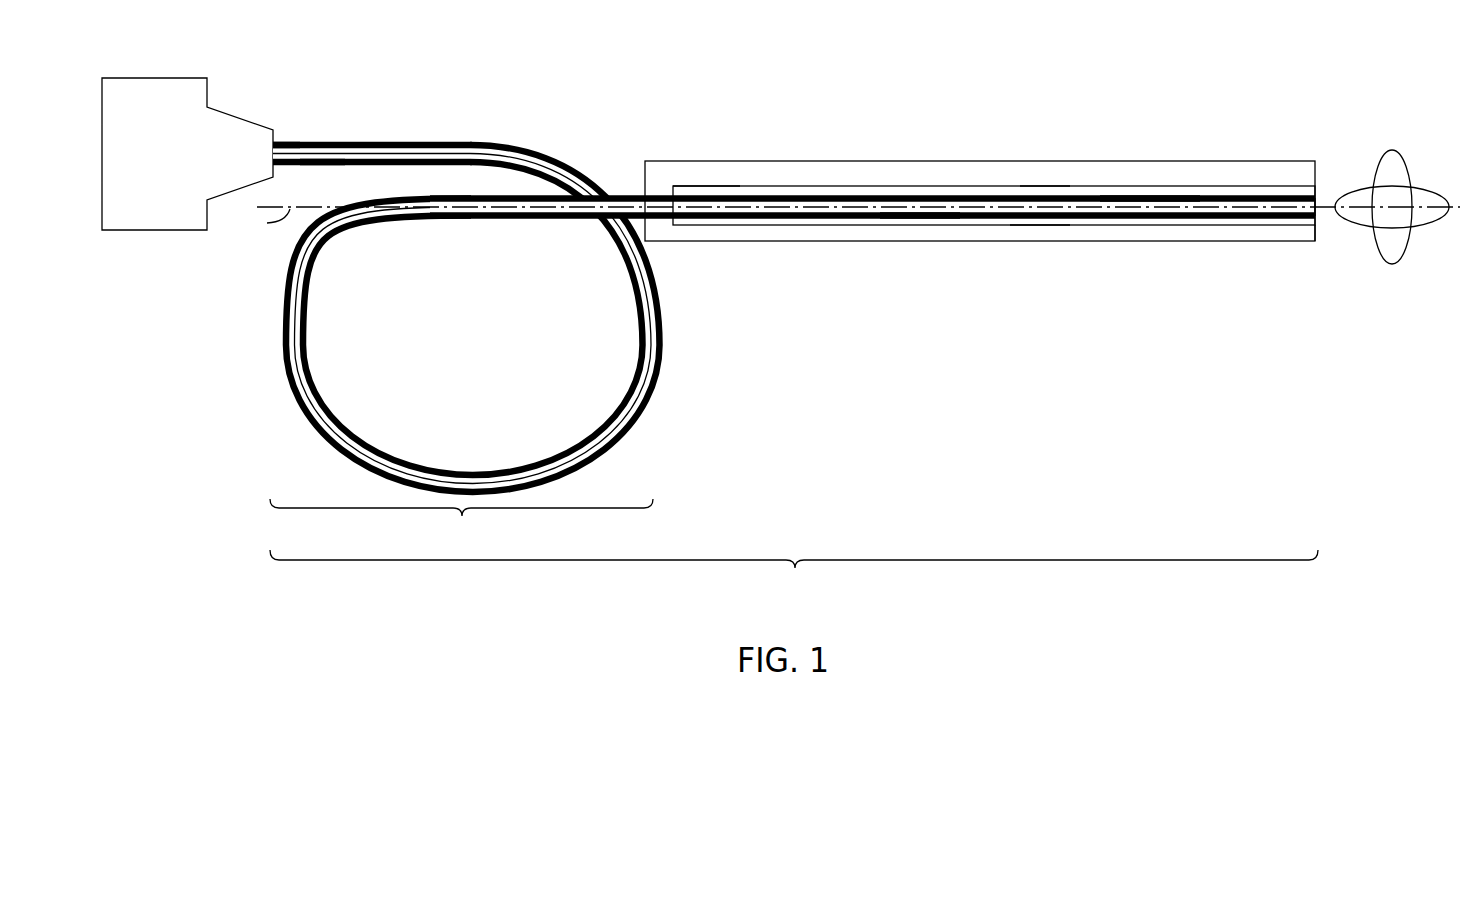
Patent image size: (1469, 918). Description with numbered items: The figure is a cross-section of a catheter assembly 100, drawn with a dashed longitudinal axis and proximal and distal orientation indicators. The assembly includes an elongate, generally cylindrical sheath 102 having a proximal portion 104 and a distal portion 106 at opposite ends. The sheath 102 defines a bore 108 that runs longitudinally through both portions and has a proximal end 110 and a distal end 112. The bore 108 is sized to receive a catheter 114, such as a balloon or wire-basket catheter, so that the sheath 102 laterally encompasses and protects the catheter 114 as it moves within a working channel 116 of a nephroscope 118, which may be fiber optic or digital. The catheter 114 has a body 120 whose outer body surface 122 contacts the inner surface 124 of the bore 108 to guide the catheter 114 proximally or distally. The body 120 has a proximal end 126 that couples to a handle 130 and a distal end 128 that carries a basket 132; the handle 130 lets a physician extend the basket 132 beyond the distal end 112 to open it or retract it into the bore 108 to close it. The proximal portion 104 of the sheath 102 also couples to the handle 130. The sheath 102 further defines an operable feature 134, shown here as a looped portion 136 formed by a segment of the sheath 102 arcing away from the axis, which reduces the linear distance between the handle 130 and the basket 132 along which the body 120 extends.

The catheter assembly 100 is at (781, 320).
The sheath 102 is at (966, 186).
The proximal portion 104 is at (370, 142).
The distal portion 106 is at (1133, 194).
The bore 108 is at (715, 190).
The proximal end 110 is at (338, 158).
The distal end 112 is at (1298, 217).
The catheter 114 is at (543, 160).
The working channel 116 is at (1043, 188).
The nephroscope 118 is at (890, 173).
The body 120 is at (796, 200).
The outer body surface 122 is at (916, 207).
The inner surface 124 is at (1037, 211).
The proximal end 126 is at (276, 142).
The distal end 128 is at (1317, 204).
The handle 130 is at (160, 78).
The basket 132 is at (1395, 150).
The operable feature 134 is at (461, 521).
The looped portion 136 is at (285, 329).